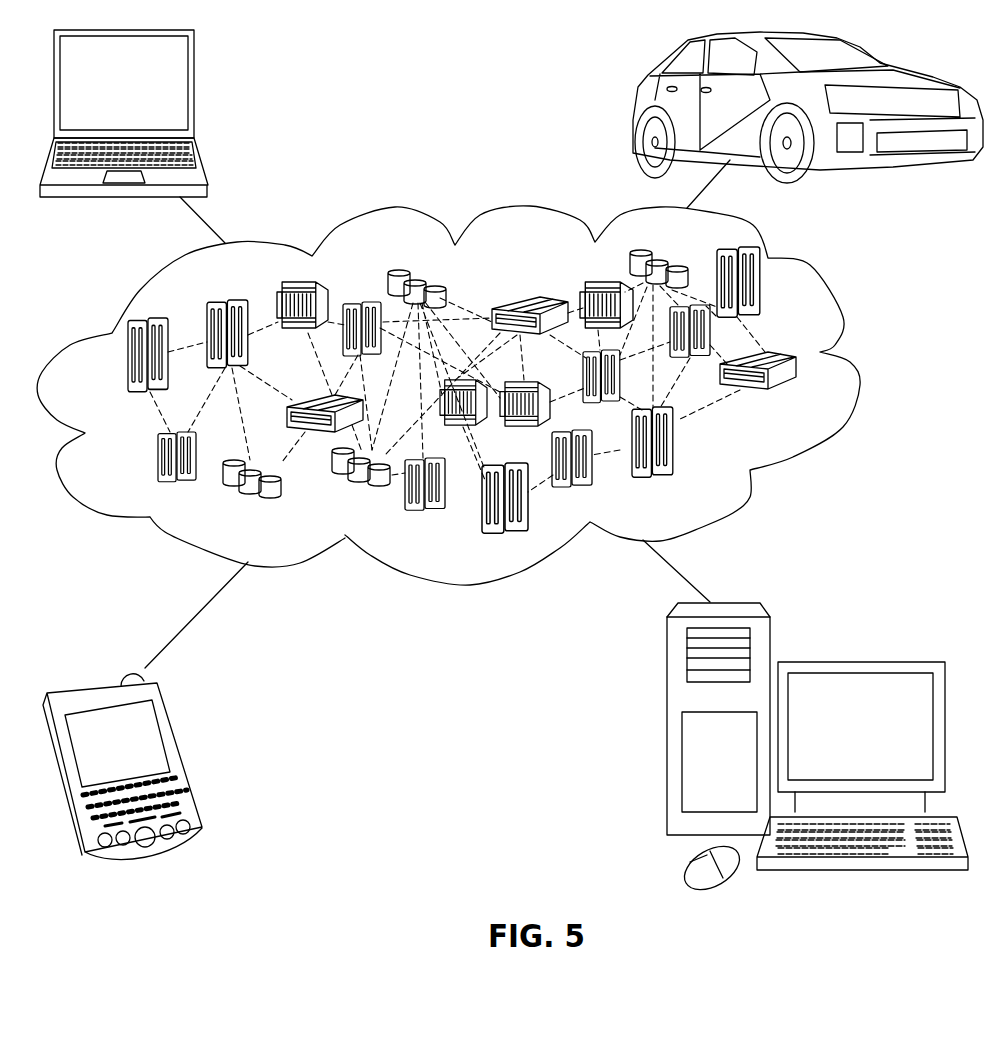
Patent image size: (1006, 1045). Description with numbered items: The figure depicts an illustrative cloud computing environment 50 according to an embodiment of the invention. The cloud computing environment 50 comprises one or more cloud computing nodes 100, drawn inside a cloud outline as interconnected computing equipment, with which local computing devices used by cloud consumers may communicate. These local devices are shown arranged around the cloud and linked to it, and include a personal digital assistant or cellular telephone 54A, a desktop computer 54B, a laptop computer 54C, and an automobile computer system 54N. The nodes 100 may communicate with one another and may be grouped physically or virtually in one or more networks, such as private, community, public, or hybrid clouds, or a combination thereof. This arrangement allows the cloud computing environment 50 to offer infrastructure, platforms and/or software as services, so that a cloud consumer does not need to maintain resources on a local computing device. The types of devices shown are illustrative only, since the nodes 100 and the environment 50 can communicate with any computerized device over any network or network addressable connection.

The cloud computing environment 50 is at (860, 367).
The cloud computing nodes 100 is at (808, 402).
The personal digital assistant or cellular telephone 54A is at (183, 757).
The desktop computer 54B is at (857, 662).
The laptop computer 54C is at (195, 93).
The automobile computer system 54N is at (636, 108).